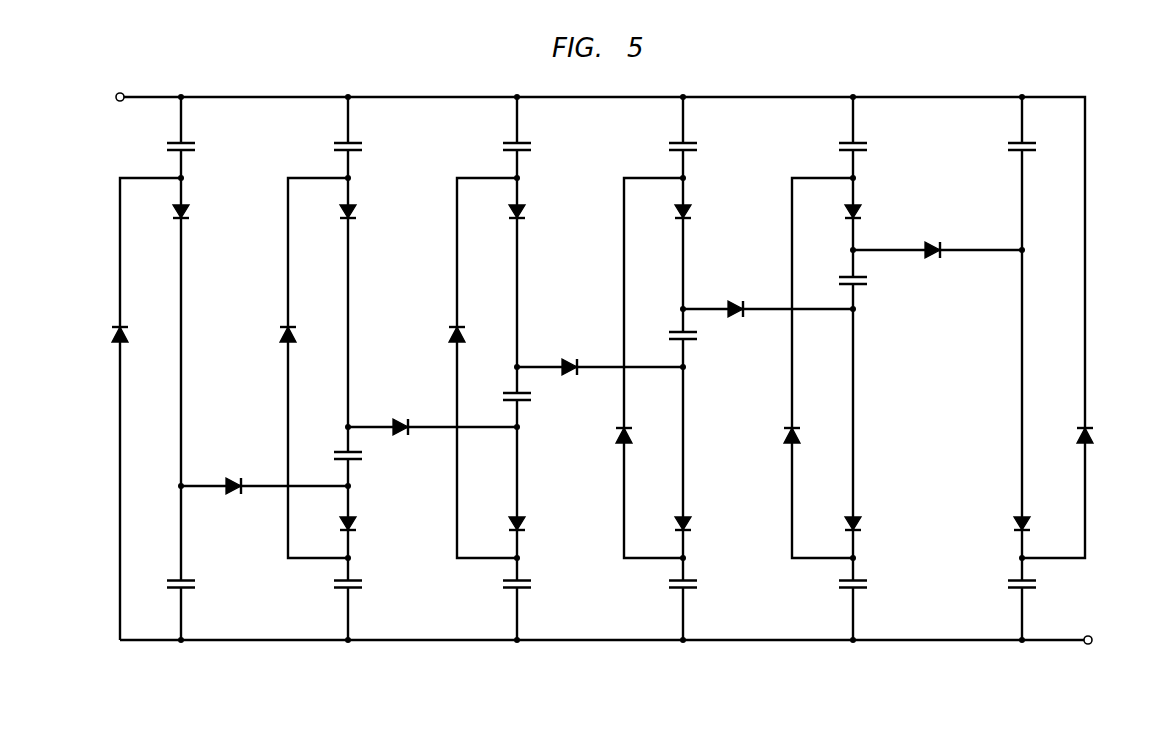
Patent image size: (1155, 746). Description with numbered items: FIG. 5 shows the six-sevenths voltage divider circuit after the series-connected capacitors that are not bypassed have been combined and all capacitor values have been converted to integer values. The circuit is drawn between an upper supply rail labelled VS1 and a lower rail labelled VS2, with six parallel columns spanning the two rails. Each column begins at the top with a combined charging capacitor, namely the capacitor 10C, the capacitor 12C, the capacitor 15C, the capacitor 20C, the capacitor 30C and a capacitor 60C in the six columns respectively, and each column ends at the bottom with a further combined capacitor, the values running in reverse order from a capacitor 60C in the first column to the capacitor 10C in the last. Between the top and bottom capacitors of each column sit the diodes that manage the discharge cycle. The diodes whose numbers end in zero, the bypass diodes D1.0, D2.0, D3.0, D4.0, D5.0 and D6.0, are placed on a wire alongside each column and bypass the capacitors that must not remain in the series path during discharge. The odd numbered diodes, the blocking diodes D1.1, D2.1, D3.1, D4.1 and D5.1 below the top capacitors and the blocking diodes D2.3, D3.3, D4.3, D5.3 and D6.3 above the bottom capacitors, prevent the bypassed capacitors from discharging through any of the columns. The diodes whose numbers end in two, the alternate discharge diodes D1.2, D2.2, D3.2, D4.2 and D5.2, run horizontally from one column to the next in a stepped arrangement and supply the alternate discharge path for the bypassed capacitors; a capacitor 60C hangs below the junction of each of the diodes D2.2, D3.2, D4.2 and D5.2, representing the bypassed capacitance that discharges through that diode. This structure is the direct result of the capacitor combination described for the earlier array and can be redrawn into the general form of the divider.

The first supply voltage terminal VS1 is at (105, 96).
The second supply voltage terminal VS2 is at (1103, 640).
The capacitor of value 10C is at (619, 366).
The capacitor of value 12C is at (366, 147).
The capacitor of value 15C is at (703, 366).
The capacitor of value 20C is at (701, 366).
The capacitor of value 30C is at (703, 366).
The capacitor of value 60C is at (619, 366).
The bypass diode D1.0 is at (140, 335).
The blocking diode D1.1 is at (202, 213).
The alternate discharge diode D1.2 is at (236, 477).
The bypass diode D2.0 is at (308, 335).
The blocking diode D2.1 is at (369, 213).
The alternate discharge diode D2.2 is at (403, 418).
The blocking diode D2.3 is at (369, 525).
The bypass diode D3.0 is at (477, 335).
The blocking diode D3.1 is at (538, 213).
The alternate discharge diode D3.2 is at (572, 358).
The blocking diode D3.3 is at (538, 525).
The bypass diode D4.0 is at (644, 436).
The blocking diode D4.1 is at (704, 213).
The alternate discharge diode D4.2 is at (740, 300).
The blocking diode D4.3 is at (704, 525).
The bypass diode D5.0 is at (812, 436).
The blocking diode D5.1 is at (874, 213).
The alternate discharge diode D5.2 is at (937, 241).
The blocking diode D5.3 is at (874, 525).
The bypass diode D6.0 is at (1105, 436).
The blocking diode D6.3 is at (1043, 525).